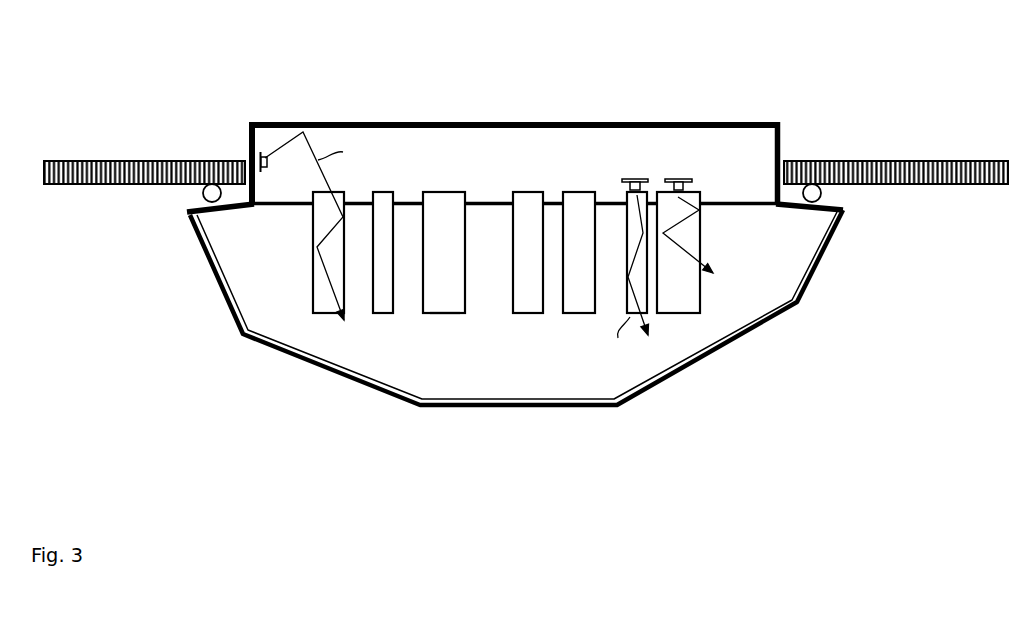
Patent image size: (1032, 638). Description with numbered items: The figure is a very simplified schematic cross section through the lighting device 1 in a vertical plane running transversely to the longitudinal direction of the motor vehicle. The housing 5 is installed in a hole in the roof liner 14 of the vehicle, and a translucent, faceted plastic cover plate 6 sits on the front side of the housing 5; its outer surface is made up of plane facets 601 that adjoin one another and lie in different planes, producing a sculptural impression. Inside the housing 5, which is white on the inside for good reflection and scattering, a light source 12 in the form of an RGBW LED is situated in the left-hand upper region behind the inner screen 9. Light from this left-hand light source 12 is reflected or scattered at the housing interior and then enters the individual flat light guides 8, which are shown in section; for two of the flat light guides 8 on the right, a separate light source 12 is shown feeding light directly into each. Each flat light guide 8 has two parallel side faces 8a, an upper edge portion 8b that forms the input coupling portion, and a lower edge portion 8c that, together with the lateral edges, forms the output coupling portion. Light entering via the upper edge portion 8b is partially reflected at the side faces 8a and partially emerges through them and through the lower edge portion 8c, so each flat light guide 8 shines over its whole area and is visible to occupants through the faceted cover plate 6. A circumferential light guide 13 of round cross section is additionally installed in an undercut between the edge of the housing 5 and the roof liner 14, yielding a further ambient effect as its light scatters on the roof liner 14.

The lighting device 1 is at (490, 104).
The housing 5 is at (658, 121).
The cover plate 6 is at (322, 370).
The facets 601 is at (498, 408).
The flat light guide 8 is at (313, 292).
The side faces 8a is at (421, 314).
The upper edge portion 8b is at (444, 191).
The lower edge portion 8c is at (445, 314).
The inner screen 9 is at (405, 191).
The light source 12 is at (264, 153).
The circumferential light guide 13 is at (201, 194).
The roof liner 14 is at (95, 160).